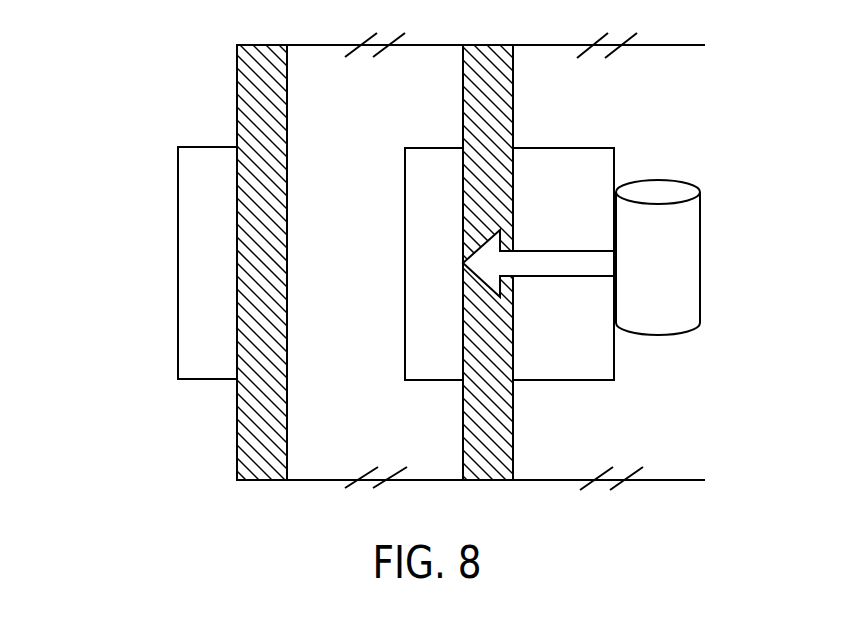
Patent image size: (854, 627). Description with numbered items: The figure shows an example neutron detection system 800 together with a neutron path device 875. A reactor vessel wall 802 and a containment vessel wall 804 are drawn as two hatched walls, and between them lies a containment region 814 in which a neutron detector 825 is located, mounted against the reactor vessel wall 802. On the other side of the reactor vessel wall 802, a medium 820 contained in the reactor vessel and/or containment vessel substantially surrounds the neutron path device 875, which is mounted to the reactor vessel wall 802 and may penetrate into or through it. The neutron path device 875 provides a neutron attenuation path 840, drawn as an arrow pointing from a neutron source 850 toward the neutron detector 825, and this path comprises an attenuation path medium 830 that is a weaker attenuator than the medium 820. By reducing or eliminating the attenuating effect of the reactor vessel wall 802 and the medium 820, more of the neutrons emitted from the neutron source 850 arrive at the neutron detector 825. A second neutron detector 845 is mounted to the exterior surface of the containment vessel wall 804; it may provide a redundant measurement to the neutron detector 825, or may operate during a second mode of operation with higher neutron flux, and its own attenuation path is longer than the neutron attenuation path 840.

The neutron detection system 800 is at (172, 432).
The reactor vessel wall 802 is at (463, 128).
The containment vessel wall 804 is at (230, 110).
The containment region 814 is at (355, 431).
The medium 820 is at (606, 431).
The neutron detector 825 is at (404, 293).
The attenuation path medium 830 is at (544, 331).
The neutron attenuation path 840 is at (538, 248).
The second neutron detector 845 is at (176, 293).
The neutron source 850 is at (673, 177).
The neutron path device 875 is at (585, 147).